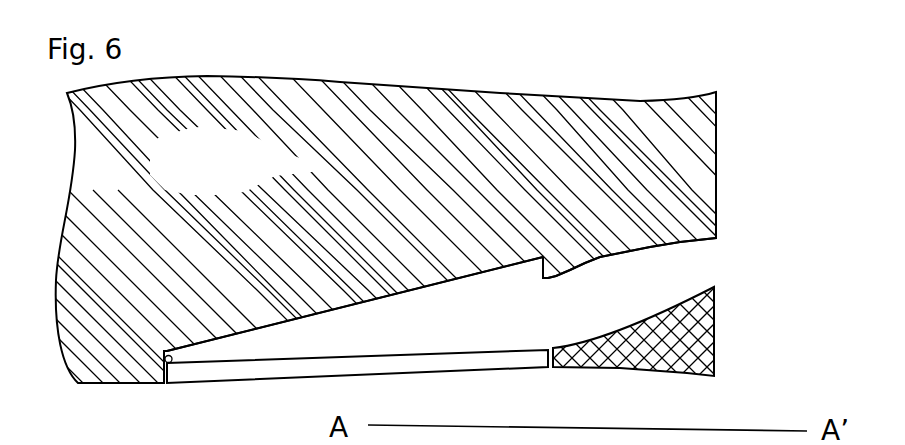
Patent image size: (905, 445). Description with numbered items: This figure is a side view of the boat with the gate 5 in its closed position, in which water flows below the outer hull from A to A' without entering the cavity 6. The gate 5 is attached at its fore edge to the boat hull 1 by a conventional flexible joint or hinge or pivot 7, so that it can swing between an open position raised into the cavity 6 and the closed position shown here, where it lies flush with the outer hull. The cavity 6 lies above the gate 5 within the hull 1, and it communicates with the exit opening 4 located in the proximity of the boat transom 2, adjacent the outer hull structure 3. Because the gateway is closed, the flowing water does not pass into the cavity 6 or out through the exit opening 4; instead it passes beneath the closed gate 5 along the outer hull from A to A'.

The boat hull 1 is at (258, 160).
The boat transom 2 is at (717, 179).
The outer hull structure 3 is at (719, 342).
The exit opening 4 is at (705, 269).
The gate 5 is at (237, 371).
The cavity 6 is at (516, 310).
The flexible joint or hinge or pivot 7 is at (163, 361).